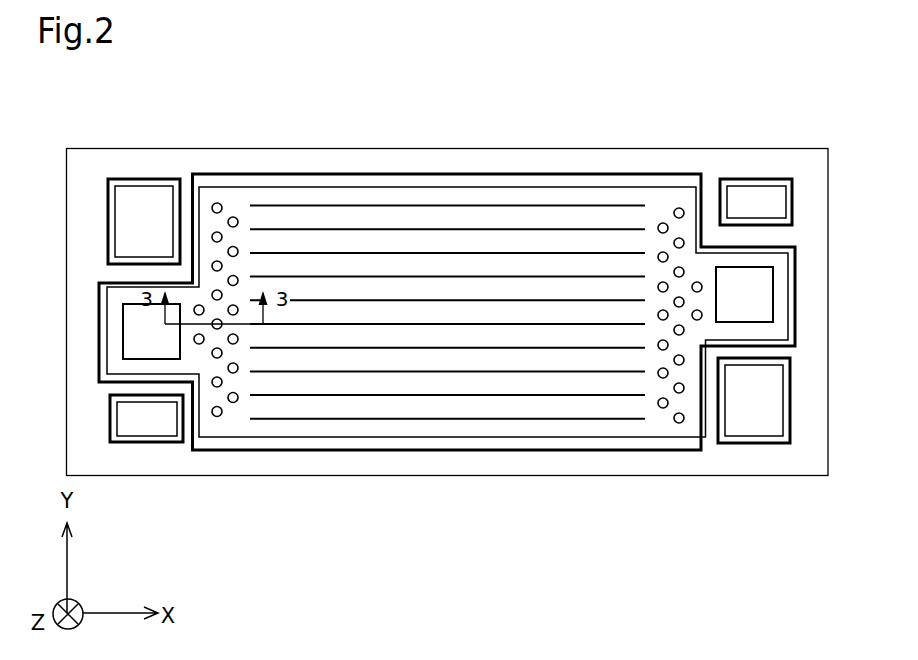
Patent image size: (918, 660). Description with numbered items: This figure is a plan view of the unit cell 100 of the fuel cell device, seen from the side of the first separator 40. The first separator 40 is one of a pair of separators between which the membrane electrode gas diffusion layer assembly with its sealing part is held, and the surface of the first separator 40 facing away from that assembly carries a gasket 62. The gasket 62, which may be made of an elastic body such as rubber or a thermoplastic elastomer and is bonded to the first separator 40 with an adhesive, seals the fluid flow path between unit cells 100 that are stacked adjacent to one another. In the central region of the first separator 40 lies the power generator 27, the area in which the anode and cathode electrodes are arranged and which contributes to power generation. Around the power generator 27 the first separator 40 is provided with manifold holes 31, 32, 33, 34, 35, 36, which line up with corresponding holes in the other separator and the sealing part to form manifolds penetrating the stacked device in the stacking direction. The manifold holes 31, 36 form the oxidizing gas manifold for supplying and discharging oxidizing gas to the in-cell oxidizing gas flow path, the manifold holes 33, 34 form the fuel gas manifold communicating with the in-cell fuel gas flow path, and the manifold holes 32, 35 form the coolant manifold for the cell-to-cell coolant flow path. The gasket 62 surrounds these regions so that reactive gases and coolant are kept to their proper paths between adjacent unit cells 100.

The unit cell 100 is at (228, 128).
The first separator 40 is at (500, 140).
The power generator 27 is at (331, 426).
The manifold hole 31 is at (138, 212).
The manifold hole 32 is at (145, 328).
The manifold hole 33 is at (138, 418).
The manifold hole 34 is at (758, 202).
The manifold hole 35 is at (752, 290).
The manifold hole 36 is at (760, 402).
The gasket 62 is at (148, 179).